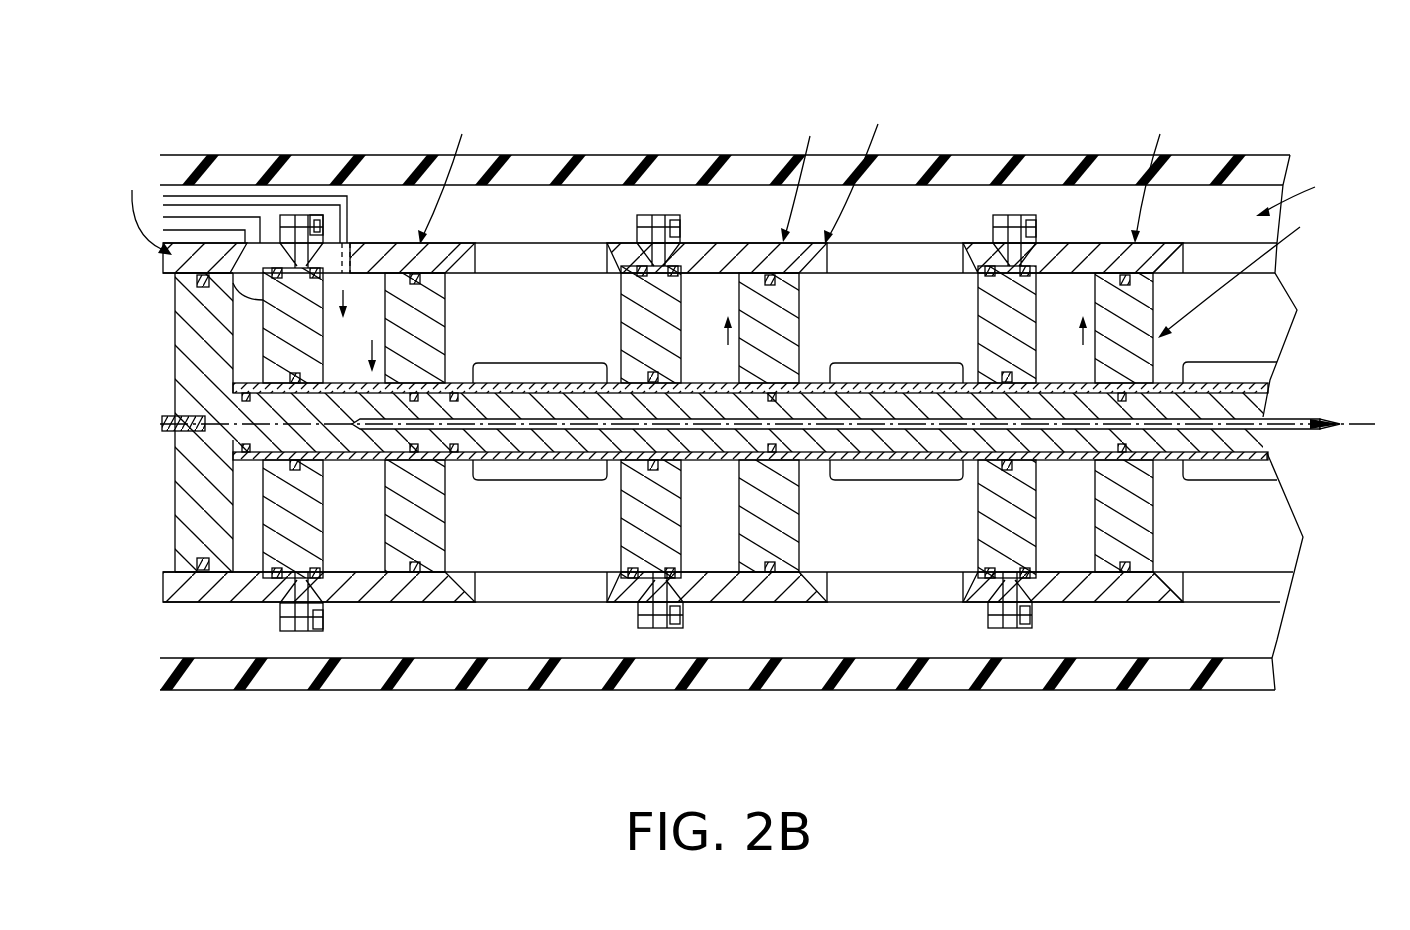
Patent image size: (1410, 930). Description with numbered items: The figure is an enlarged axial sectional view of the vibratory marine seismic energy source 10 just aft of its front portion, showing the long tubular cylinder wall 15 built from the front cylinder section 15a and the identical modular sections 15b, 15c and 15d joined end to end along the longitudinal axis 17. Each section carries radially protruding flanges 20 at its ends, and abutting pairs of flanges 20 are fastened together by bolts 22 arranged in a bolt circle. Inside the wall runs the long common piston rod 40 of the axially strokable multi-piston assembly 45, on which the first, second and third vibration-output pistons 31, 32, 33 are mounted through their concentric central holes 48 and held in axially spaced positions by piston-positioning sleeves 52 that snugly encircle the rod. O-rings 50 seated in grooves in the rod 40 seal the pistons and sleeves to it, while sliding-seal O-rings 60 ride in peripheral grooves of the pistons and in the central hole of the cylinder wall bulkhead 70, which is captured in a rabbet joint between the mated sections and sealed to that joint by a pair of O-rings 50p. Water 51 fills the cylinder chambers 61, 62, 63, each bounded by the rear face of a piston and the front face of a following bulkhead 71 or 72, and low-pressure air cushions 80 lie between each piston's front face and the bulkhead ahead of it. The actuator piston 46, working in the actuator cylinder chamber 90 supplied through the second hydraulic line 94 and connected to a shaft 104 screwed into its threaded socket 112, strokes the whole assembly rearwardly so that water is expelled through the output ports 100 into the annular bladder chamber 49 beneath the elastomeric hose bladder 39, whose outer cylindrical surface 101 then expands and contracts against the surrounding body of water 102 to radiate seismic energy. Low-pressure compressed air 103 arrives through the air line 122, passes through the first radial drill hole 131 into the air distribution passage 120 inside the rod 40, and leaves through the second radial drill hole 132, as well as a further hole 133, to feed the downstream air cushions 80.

The vibratory marine seismic energy source 10 is at (1224, 70).
The cylinder wall 15 is at (860, 170).
The front cylinder section 15a is at (142, 208).
The cylinder section 15b is at (454, 175).
The cylinder section 15c is at (809, 175).
The cylinder section 15d is at (1159, 174).
The longitudinal axis 17 is at (1352, 432).
The flange 20 is at (648, 252).
The bolt 22 is at (680, 228).
The first vibration-output piston 31 is at (435, 305).
The second vibration-output piston 32 is at (785, 320).
The third vibration-output piston 33 is at (1148, 320).
The elastomeric hose bladder 39 is at (640, 152).
The piston rod 40 is at (512, 398).
The multi-piston assembly 45 is at (1245, 271).
The actuator piston 46 is at (178, 350).
The central hole 48 is at (1240, 395).
The annular bladder chamber 49 is at (1302, 191).
The O-ring 50 is at (268, 468).
The O-ring 50p is at (275, 277).
The water 51 is at (513, 549).
The piston-positioning sleeve 52 is at (240, 388).
The sliding-seal O-ring 60 is at (440, 262).
The first cylinder chamber 61 is at (505, 311).
The second cylinder chamber 62 is at (867, 314).
The third cylinder chamber 63 is at (1228, 314).
The cylinder wall bulkhead 70 is at (258, 576).
The cylinder wall bulkhead 71 is at (620, 560).
The cylinder wall bulkhead 72 is at (990, 562).
The low-pressure air cushion 80 is at (372, 340).
The actuator cylinder chamber 90 is at (245, 302).
The second hydraulic line 94 is at (205, 222).
The output port 100 is at (910, 241).
The cylindrical surface 101 is at (688, 154).
The surrounding body of water 102 is at (785, 66).
The low-pressure compressed air 103 is at (343, 290).
The shaft 104 is at (162, 425).
The screw-threaded socket 112 is at (180, 447).
The low-pressure air distribution passage 120 is at (1262, 481).
The low-pressure air line 122 is at (318, 213).
The first radial drill hole 131 is at (360, 421).
The second radial drill hole 132 is at (705, 341).
The third channel 133 is at (1062, 341).